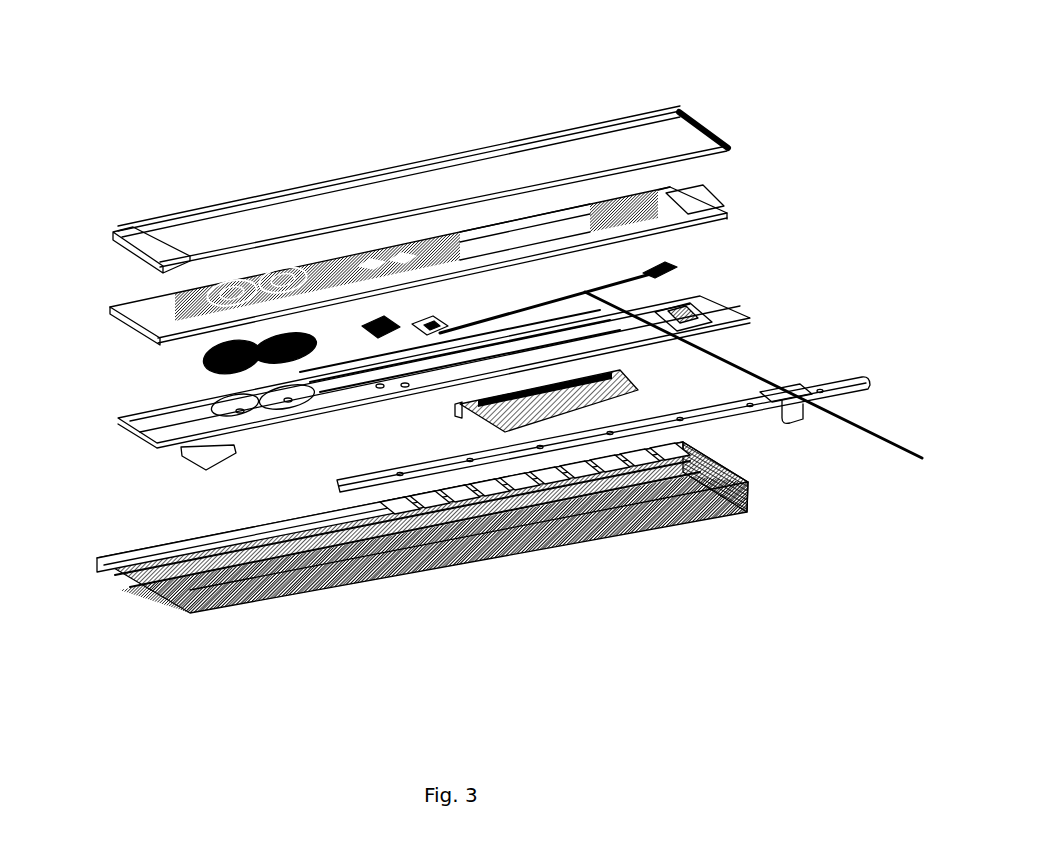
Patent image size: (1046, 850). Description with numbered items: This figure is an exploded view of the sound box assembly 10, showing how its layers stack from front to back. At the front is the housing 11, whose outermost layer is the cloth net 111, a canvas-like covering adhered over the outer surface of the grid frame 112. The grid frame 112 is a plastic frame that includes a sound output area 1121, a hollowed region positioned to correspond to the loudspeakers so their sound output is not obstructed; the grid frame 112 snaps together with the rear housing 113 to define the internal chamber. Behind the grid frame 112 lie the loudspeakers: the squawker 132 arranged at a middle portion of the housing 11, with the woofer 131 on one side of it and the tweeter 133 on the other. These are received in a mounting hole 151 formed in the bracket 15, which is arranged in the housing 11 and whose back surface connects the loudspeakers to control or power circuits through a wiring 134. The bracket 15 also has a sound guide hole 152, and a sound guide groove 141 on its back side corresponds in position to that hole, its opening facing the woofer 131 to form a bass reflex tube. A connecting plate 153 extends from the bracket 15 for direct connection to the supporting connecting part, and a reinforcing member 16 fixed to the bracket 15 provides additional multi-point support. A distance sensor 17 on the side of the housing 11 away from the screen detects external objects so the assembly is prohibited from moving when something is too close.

The sound box assembly 10 is at (152, 43).
The housing 11 is at (44, 362).
The cloth net 111 is at (128, 246).
The grid frame 112 is at (150, 322).
The sound output area 1121 is at (282, 276).
The rear housing 113 is at (140, 548).
The woofer 131 is at (205, 362).
The squawker 132 is at (402, 326).
The tweeter 133 is at (446, 318).
The wiring 134 is at (760, 380).
The sound guide groove 141 is at (632, 402).
The bracket 15 is at (710, 337).
The mounting hole 151 is at (288, 401).
The sound guide hole 152 is at (664, 311).
The connecting plate 153 is at (203, 443).
The reinforcing member 16 is at (740, 421).
The distance sensor 17 is at (676, 268).